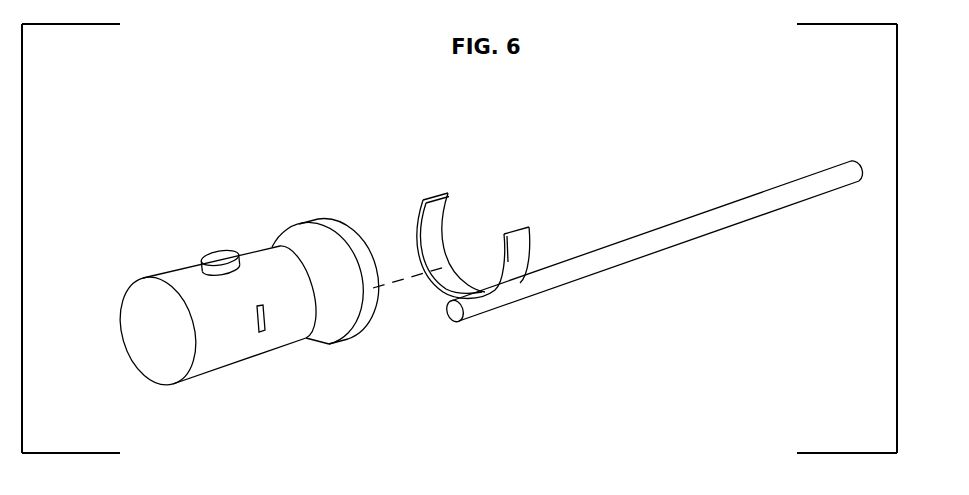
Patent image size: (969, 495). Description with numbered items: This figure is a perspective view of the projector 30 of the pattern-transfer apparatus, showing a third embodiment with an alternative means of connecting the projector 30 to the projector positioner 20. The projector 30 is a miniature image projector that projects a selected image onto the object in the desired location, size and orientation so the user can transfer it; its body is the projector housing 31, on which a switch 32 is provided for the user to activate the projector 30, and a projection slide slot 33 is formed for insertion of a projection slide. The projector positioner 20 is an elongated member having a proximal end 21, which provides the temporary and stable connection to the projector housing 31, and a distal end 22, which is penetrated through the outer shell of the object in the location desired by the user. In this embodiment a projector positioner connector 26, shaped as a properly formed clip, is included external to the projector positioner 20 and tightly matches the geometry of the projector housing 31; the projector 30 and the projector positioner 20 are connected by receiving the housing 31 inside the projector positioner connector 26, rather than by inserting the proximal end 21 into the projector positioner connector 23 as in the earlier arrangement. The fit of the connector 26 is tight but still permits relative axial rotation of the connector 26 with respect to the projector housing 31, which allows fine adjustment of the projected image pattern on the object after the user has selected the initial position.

The projector positioner 20 is at (693, 250).
The proximal end of the projector positioner 21 is at (453, 318).
The distal end of the projector positioner 22 is at (862, 158).
The projector positioner connector 23 is at (507, 308).
The projector positioner connector 26 is at (517, 240).
The projector 30 is at (256, 365).
The projector housing 31 is at (335, 262).
The switch 32 is at (218, 255).
The projection slide slot 33 is at (262, 305).